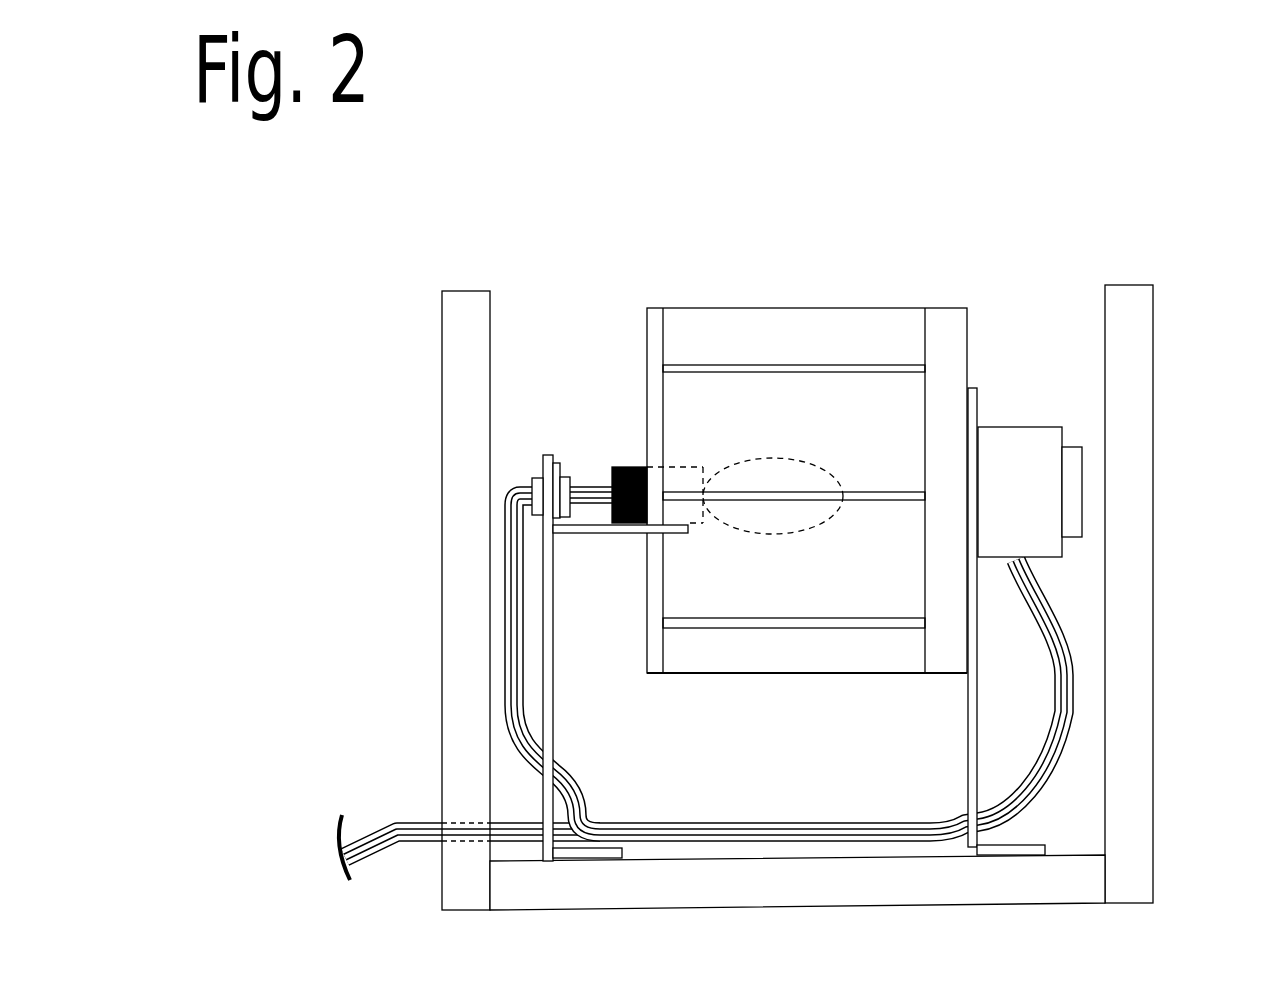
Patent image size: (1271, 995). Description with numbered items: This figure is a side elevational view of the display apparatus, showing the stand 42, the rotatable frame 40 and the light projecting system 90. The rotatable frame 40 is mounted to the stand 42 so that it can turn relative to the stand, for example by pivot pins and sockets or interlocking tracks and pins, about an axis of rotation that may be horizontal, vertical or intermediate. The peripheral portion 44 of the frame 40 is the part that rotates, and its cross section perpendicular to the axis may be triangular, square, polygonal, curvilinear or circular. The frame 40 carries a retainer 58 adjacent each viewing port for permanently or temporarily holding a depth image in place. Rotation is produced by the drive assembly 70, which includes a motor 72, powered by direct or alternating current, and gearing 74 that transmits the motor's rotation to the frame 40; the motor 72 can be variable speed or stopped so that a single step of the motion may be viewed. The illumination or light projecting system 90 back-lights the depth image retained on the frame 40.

The rotatable frame 40 is at (798, 482).
The stand 42 is at (468, 678).
The peripheral portion 44 is at (648, 676).
The retainer 58 is at (814, 360).
The drive assembly 70 is at (1025, 425).
The motor 72 is at (1065, 487).
The gearing 74 is at (1025, 523).
The light projecting system 90 is at (610, 463).